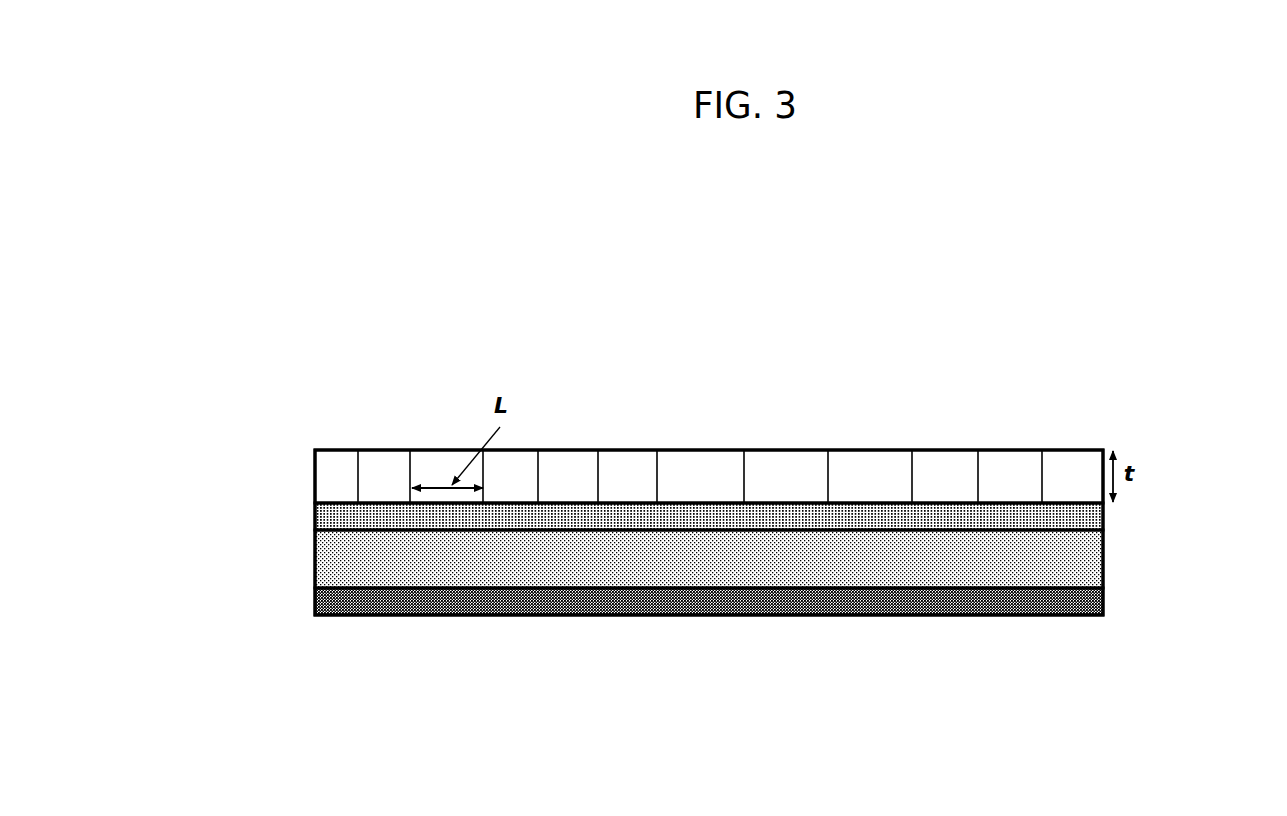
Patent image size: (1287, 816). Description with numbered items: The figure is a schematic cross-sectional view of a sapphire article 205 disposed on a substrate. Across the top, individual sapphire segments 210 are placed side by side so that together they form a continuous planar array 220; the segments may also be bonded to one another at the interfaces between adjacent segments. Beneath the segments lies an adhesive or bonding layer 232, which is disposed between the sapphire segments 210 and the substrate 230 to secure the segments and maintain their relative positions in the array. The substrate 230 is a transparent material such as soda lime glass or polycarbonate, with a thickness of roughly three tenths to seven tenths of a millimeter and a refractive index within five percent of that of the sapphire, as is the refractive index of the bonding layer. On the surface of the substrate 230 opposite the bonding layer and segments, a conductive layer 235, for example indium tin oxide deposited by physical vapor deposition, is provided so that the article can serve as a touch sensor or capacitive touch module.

The sapphire article 205 is at (761, 266).
The sapphire segments 210 is at (951, 476).
The continuous planar array 220 is at (318, 356).
The substrate 230 is at (1106, 570).
The adhesive or bonding layer 232 is at (311, 517).
The conductive layer 235 is at (564, 616).